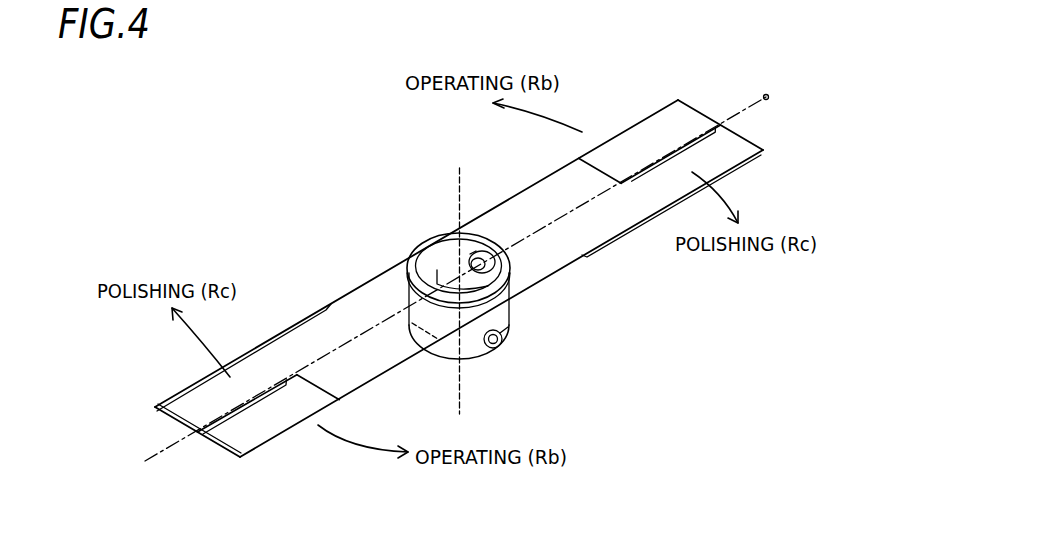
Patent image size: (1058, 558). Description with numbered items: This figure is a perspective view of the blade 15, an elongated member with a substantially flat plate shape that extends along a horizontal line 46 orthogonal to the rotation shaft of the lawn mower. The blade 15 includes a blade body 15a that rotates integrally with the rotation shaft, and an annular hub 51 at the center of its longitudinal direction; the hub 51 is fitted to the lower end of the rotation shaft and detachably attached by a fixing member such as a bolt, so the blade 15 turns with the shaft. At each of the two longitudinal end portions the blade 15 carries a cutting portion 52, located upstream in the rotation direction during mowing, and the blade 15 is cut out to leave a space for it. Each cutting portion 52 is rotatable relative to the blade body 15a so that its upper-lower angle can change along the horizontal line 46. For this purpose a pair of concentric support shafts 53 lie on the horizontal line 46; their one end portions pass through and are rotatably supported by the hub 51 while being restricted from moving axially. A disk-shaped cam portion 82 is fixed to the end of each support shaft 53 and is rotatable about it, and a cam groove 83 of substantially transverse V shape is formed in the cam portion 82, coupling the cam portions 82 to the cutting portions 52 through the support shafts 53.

The blade 15 is at (375, 298).
The blade body 15a is at (187, 406).
The horizontal line 46 is at (143, 458).
The hub 51 is at (443, 353).
The cutting portion 52 is at (635, 135).
The support shaft 53 is at (567, 212).
The cam portion 82 is at (484, 257).
The cam groove 83 is at (458, 262).